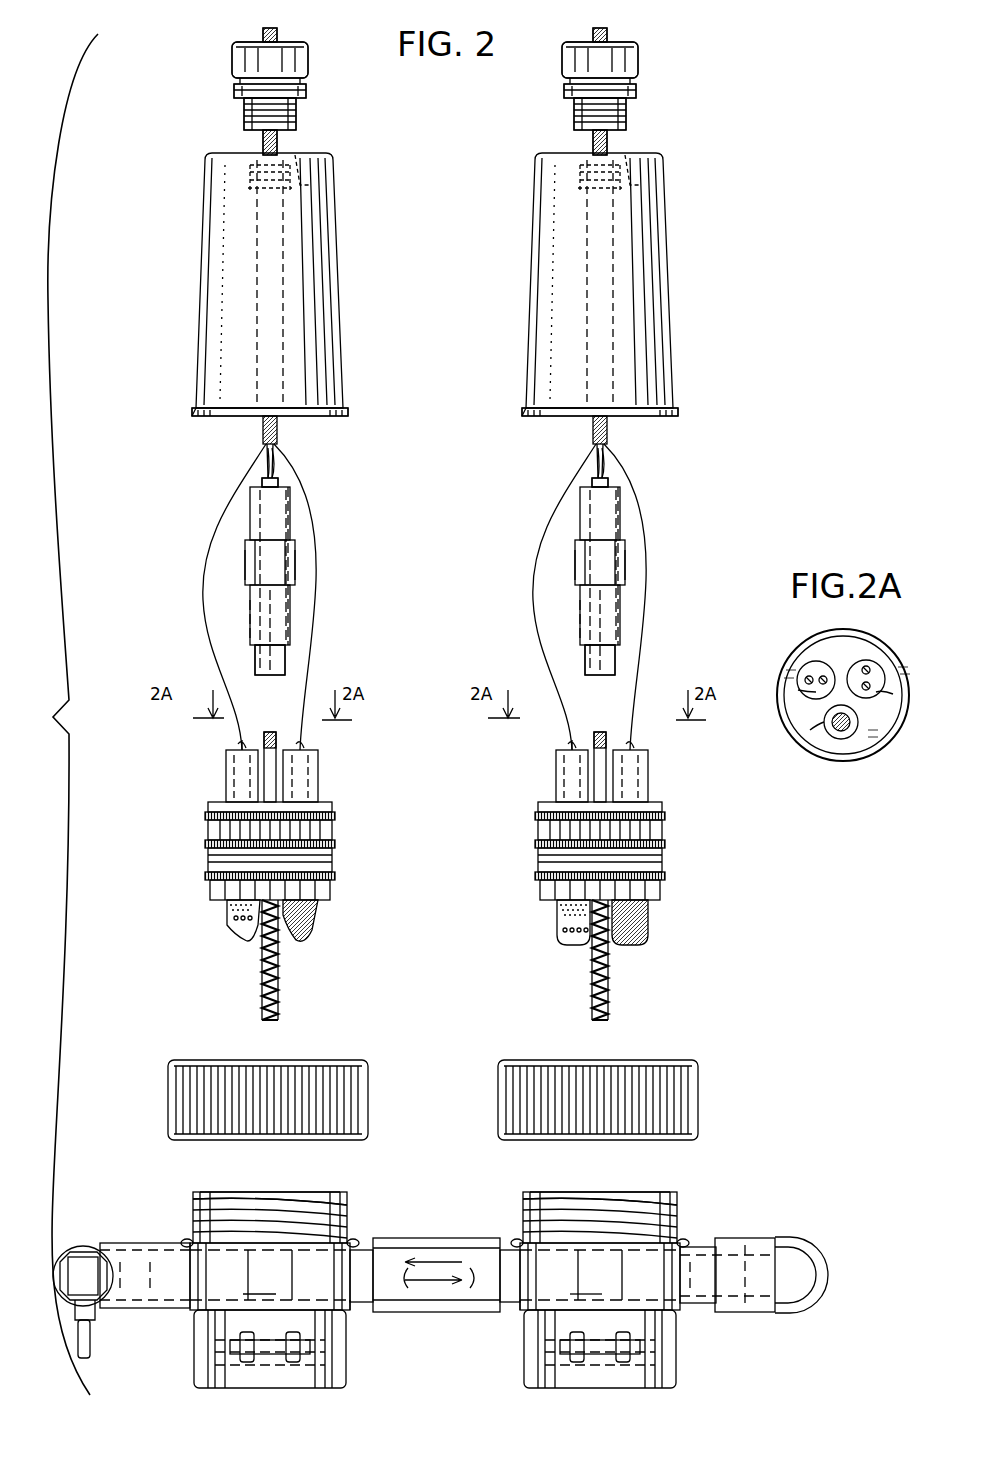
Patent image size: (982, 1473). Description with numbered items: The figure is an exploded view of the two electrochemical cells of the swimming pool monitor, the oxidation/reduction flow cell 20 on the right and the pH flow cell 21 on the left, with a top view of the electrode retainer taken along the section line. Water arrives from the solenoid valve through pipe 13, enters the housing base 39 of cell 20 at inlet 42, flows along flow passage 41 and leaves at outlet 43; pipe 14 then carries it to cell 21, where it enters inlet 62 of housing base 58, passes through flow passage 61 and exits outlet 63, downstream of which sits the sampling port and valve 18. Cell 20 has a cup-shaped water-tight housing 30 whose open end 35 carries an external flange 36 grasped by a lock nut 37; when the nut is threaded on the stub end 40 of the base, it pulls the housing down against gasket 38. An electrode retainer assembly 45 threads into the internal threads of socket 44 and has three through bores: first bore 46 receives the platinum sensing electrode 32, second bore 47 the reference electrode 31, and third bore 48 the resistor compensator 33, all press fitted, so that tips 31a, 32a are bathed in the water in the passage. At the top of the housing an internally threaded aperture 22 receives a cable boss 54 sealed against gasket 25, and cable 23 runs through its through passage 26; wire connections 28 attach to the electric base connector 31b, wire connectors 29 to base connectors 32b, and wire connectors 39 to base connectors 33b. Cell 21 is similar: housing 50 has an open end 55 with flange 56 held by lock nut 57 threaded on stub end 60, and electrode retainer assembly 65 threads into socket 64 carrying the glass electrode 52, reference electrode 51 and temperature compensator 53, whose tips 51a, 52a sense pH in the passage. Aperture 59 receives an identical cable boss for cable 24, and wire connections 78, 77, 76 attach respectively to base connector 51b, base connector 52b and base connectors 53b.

In FIG. 2, the pipe 13 is at (808, 1250).
In FIG. 2, the pipe 14 is at (428, 1230).
In FIG. 2, the sampling port and valve 18 is at (88, 1266).
In FIG. 2, the oxidation/reduction flow cell 20 is at (626, 245).
In FIG. 2, the pH flow cell 21 is at (296, 251).
In FIG. 2, the aperture 22 is at (622, 148).
In FIG. 2, the cable 23 is at (598, 34).
In FIG. 2, the cable 24 is at (263, 38).
In FIG. 2, the gasket 25 is at (236, 100).
In FIG. 2, the through passage 26 is at (250, 132).
In FIG. 2, the wire connections 28 is at (600, 462).
In FIG. 2, the wire connectors 29 is at (648, 580).
In FIG. 2, the water-tight housing 30 is at (668, 348).
In FIG. 2, the reference electrode 31 is at (582, 572).
In FIG. 2A, the reference electrode 31 is at (846, 740).
In FIG. 2, the tip of reference electrode 31a is at (602, 676).
In FIG. 2, the electric base connector 31b is at (592, 481).
In FIG. 2, the platinum sensing electrode 32 is at (648, 780).
In FIG. 2A, the platinum sensing electrode 32 is at (876, 670).
In FIG. 2, the tip of platinum electrode 32a is at (636, 942).
In FIG. 2, the electric base connectors 32b is at (632, 745).
In FIG. 2, the resistor compensator 33 is at (558, 776).
In FIG. 2A, the resistor compensator 33 is at (816, 660).
In FIG. 2, the electric base connectors 33b is at (562, 745).
In FIG. 2, the open end 35 is at (542, 418).
In FIG. 2, the external flange 36 is at (680, 412).
In FIG. 2, the lock nut 37 is at (708, 1092).
In FIG. 2, the gasket 38 is at (686, 1242).
In FIG. 2, the housing base 39 is at (535, 600).
In FIG. 2, the stub end 40 is at (528, 1204).
In FIG. 2, the flow passage 41 is at (606, 1265).
In FIG. 2, the inlet 42 is at (716, 1246).
In FIG. 2, the outlet 43 is at (516, 1312).
In FIG. 2, the socket 44 is at (655, 1190).
In FIG. 2, the electrode retainer assembly 45 is at (646, 857).
In FIG. 2A, the first bore 46 is at (890, 696).
In FIG. 2A, the second bore 47 is at (810, 730).
In FIG. 2A, the third bore 48 is at (798, 692).
In FIG. 2, the flow cell housing 50 is at (338, 346).
In FIG. 2, the reference electrode 51 is at (250, 570).
In FIG. 2, the tip of reference electrode 51a is at (288, 668).
In FIG. 2, the electric base connector 51b is at (262, 481).
In FIG. 2, the glass electrode 52 is at (316, 780).
In FIG. 2, the tip of glass electrode 52a is at (318, 925).
In FIG. 2, the base connector 52b is at (312, 745).
In FIG. 2, the temperature compensator 53 is at (228, 770).
In FIG. 2, the base connectors 53b is at (232, 745).
In FIG. 2, the cable boss 54 is at (300, 88).
In FIG. 2, the open end 55 is at (212, 418).
In FIG. 2, the flange 56 is at (348, 412).
In FIG. 2, the lock nut 57 is at (372, 1080).
In FIG. 2, the housing base 58 is at (352, 1242).
In FIG. 2, the aperture 59 is at (290, 148).
In FIG. 2, the stub end 60 is at (330, 1200).
In FIG. 2, the flow passage 61 is at (273, 1270).
In FIG. 2, the inlet 62 is at (362, 1312).
In FIG. 2, the outlet 63 is at (176, 1245).
In FIG. 2, the socket 64 is at (216, 1190).
In FIG. 2, the electrode retainer assembly 65 is at (292, 873).
In FIG. 2, the wire connections 76 is at (206, 602).
In FIG. 2, the wire connections 77 is at (312, 504).
In FIG. 2, the wire connections 78 is at (280, 466).